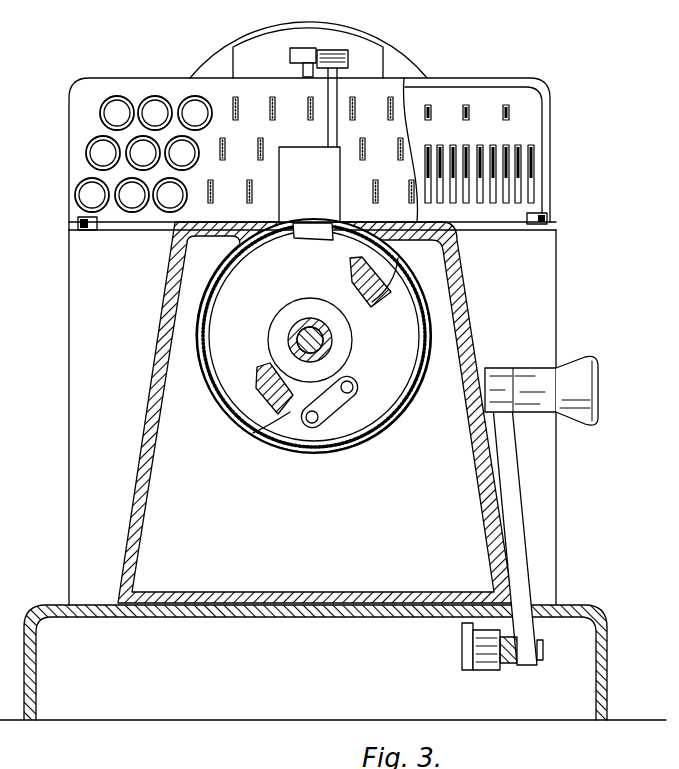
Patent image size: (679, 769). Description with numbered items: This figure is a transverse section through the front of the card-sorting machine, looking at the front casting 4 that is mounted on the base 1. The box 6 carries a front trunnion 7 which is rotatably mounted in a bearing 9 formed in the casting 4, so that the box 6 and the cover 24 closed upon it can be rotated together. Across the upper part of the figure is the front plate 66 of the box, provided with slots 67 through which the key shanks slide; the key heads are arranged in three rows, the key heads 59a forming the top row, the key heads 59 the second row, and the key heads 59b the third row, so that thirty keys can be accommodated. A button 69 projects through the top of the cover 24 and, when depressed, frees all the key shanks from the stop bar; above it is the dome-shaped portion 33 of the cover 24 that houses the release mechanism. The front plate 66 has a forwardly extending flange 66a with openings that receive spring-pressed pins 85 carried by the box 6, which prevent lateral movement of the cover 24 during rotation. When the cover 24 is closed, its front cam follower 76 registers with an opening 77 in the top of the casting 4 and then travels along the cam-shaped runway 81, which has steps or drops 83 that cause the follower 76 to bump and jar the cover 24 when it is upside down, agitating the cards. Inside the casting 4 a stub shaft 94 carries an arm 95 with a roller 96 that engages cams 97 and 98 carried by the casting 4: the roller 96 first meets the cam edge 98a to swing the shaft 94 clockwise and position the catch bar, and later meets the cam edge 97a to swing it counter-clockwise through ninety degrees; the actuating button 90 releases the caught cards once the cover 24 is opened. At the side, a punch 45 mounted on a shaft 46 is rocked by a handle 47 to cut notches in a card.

The base 1 is at (608, 648).
The casting 4 is at (466, 320).
The box 6 is at (78, 378).
The front trunnion 7 is at (326, 341).
The bearing 9 is at (296, 333).
The cover 24 is at (483, 84).
The hood 33 is at (352, 28).
The punch 45 is at (462, 630).
The shaft 46 is at (506, 672).
The handle 47 is at (503, 437).
The key head 59 is at (86, 153).
The key head 59a is at (100, 110).
The key head 59b is at (76, 195).
The front plate 66 is at (140, 83).
The flange 66a is at (136, 229).
The slots 67 is at (270, 103).
The button 69 is at (290, 55).
The front cam follower 76 is at (308, 239).
The opening 77 is at (300, 227).
The cam runway 81 is at (212, 378).
The steps or drops 83 is at (390, 421).
The pins 85 is at (78, 221).
The actuating button 90 is at (333, 50).
The stub shaft 94 is at (320, 415).
The arm 95 is at (343, 398).
The roller 96 is at (352, 391).
The cam 97 is at (385, 290).
The cam edge 97a is at (351, 276).
The cam 98 is at (272, 383).
The cam edge 98a is at (257, 446).